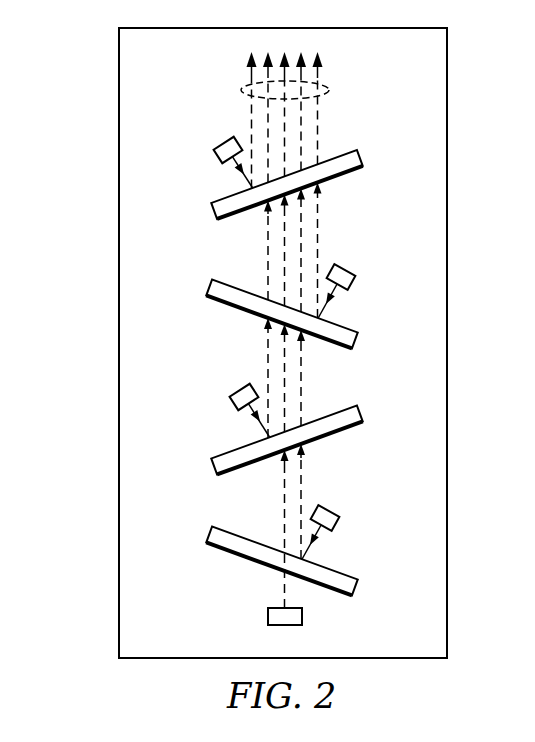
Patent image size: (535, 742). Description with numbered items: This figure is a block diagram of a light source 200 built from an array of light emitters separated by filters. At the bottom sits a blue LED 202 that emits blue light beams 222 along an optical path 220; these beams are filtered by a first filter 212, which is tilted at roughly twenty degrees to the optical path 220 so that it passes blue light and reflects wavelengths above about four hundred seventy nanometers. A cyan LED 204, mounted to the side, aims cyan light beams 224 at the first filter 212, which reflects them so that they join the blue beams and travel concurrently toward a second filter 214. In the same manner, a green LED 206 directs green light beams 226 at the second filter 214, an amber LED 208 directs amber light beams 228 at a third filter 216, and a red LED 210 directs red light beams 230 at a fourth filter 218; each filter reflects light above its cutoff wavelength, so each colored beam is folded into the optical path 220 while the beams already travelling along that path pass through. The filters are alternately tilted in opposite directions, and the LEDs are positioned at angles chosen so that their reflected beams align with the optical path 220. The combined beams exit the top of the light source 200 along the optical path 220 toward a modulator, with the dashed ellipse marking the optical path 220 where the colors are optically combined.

The light source 200 is at (108, 231).
The blue LED 202 is at (267, 615).
The cyan LED 204 is at (340, 524).
The green LED 206 is at (232, 401).
The amber LED 208 is at (356, 278).
The red LED 210 is at (215, 150).
The first filter 212 is at (357, 588).
The second filter 214 is at (212, 468).
The third filter 216 is at (358, 341).
The fourth filter 218 is at (362, 158).
The optical path 220 is at (241, 89).
The blue light beams 222 is at (282, 484).
The cyan light beams 224 is at (304, 487).
The green light beams 226 is at (266, 354).
The amber light beams 228 is at (320, 246).
The red light beams 230 is at (250, 128).